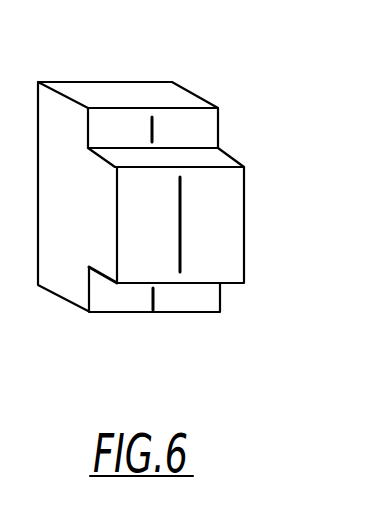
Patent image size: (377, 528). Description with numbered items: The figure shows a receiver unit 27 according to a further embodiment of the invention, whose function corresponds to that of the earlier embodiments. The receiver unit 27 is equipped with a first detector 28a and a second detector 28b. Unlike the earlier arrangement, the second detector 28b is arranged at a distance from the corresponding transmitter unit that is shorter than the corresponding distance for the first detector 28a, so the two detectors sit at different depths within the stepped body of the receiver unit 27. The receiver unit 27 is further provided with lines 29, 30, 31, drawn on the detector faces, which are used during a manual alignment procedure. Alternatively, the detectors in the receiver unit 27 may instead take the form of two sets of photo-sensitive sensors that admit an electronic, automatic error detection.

The receiver unit 27 is at (65, 280).
The first detector 28a is at (188, 126).
The second detector 28b is at (124, 243).
The line 29 is at (149, 131).
The line 30 is at (177, 260).
The line 31 is at (148, 299).